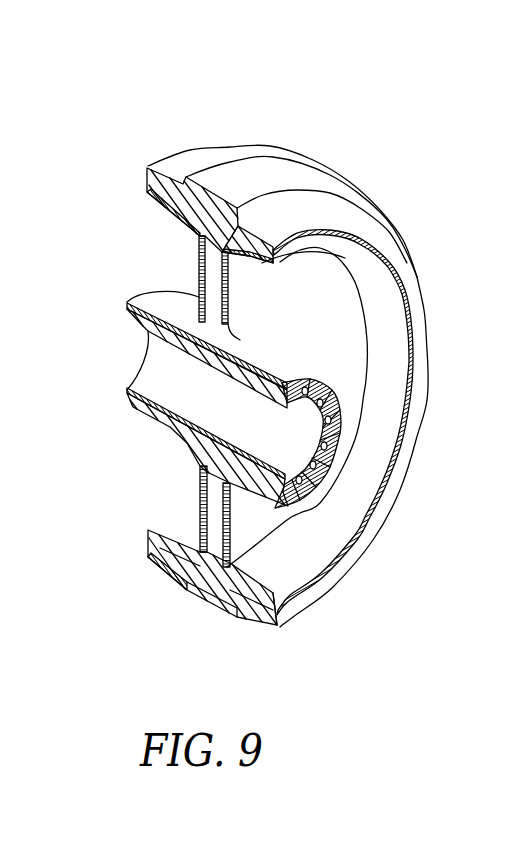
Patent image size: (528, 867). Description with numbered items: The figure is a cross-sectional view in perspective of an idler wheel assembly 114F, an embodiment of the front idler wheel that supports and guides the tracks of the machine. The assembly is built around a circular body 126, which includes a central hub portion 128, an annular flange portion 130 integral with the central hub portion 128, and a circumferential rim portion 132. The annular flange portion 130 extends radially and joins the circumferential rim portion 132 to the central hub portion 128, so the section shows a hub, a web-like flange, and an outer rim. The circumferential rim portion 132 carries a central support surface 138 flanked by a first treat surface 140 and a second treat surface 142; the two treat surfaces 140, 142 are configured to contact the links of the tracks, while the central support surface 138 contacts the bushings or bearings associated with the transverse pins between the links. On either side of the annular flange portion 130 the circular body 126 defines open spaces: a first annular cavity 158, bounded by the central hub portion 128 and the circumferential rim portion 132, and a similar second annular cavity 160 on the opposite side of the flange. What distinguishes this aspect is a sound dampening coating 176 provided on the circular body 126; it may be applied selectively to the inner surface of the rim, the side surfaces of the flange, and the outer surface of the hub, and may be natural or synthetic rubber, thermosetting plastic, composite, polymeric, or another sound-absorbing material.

The idler wheel assembly 114F is at (92, 106).
The second treat surface 142 is at (208, 157).
The central support surface 138 is at (296, 177).
The circumferential rim portion 132 is at (147, 170).
The annular flange portion 130 is at (215, 276).
The central hub portion 128 is at (128, 310).
The first treat surface 140 is at (374, 235).
The sound dampening coating 176 is at (413, 357).
The circular body 126 is at (140, 546).
The second annular cavity 160 is at (184, 494).
The first annular cavity 158 is at (268, 527).